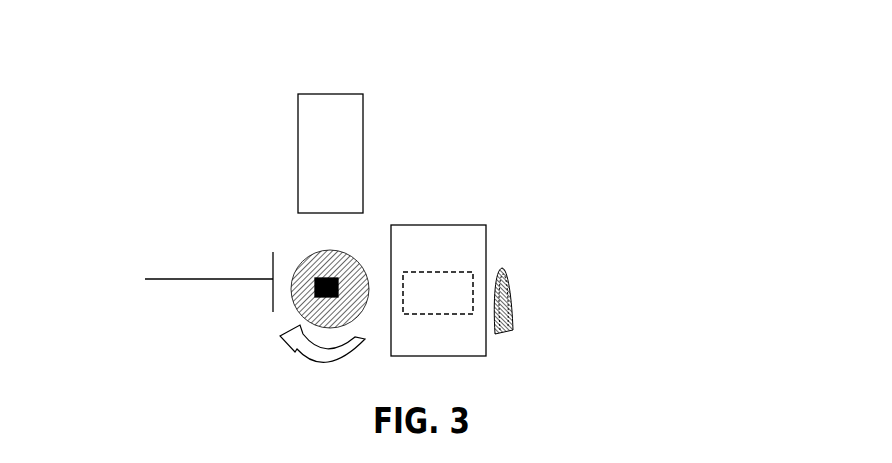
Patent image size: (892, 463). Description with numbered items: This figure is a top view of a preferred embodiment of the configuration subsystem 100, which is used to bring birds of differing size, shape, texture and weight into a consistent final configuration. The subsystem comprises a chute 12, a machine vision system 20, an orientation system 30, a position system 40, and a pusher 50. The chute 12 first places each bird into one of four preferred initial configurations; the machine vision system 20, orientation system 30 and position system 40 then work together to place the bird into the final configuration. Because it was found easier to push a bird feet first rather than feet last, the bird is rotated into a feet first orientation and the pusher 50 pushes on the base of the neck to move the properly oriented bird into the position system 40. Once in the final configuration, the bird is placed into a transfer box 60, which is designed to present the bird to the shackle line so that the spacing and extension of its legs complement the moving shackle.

The configuration subsystem 100 is at (568, 85).
The chute 12 is at (348, 153).
The machine vision system 20 is at (327, 288).
The orientation system 30 is at (303, 263).
The position system 40 is at (452, 258).
The pusher 50 is at (177, 277).
The transfer box 60 is at (460, 314).